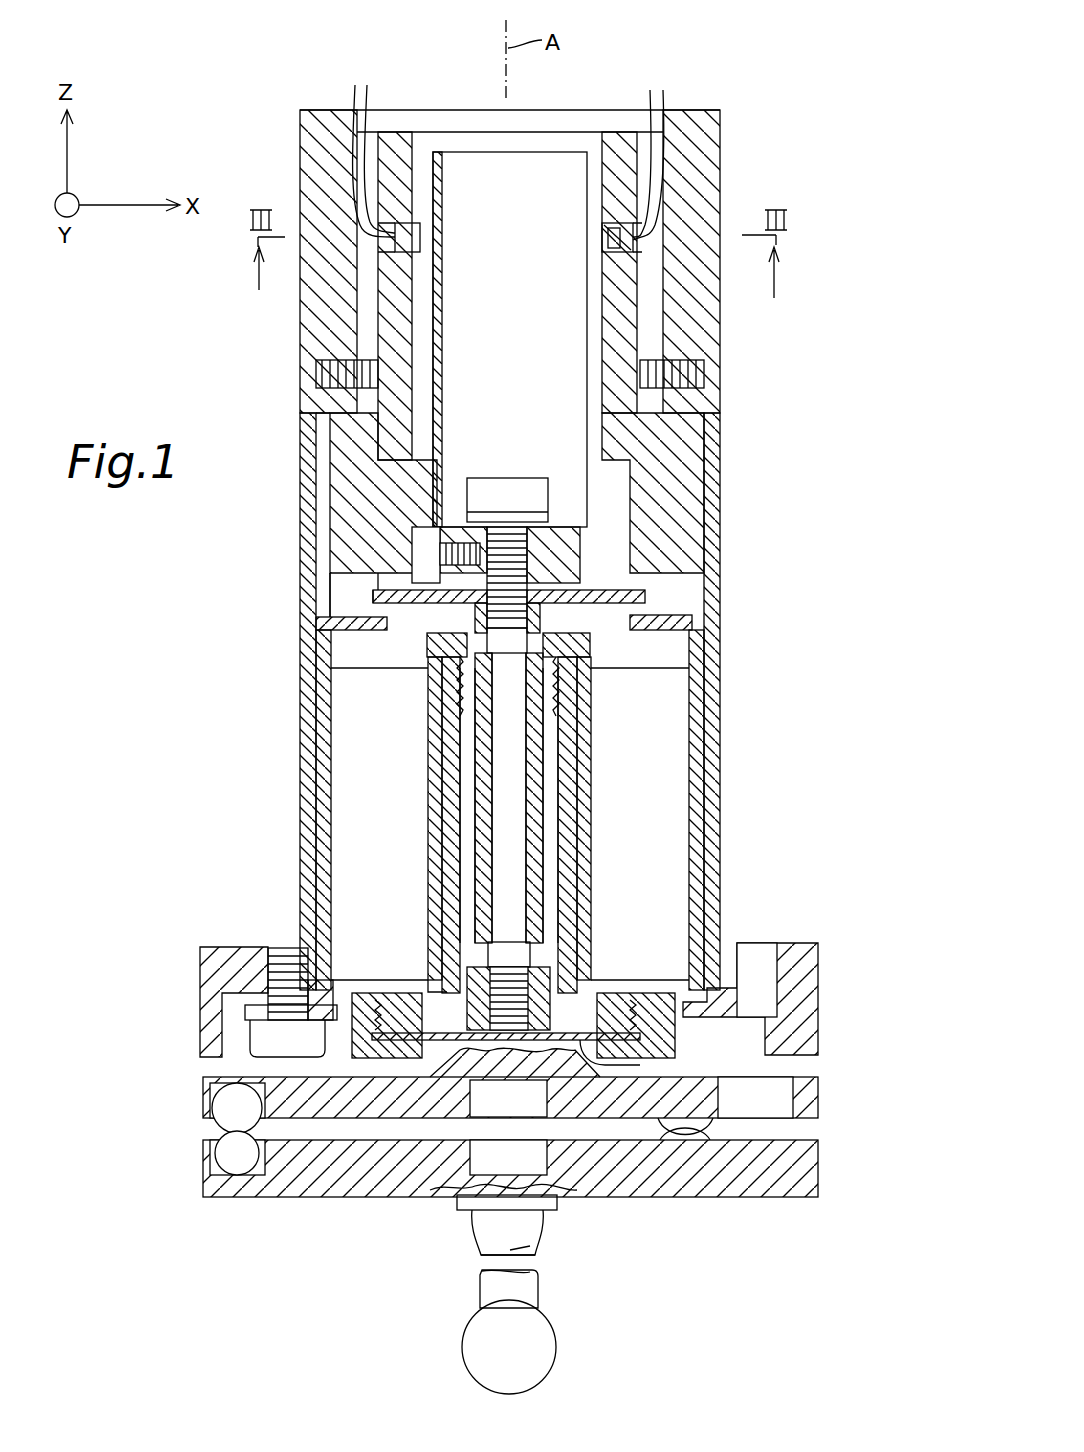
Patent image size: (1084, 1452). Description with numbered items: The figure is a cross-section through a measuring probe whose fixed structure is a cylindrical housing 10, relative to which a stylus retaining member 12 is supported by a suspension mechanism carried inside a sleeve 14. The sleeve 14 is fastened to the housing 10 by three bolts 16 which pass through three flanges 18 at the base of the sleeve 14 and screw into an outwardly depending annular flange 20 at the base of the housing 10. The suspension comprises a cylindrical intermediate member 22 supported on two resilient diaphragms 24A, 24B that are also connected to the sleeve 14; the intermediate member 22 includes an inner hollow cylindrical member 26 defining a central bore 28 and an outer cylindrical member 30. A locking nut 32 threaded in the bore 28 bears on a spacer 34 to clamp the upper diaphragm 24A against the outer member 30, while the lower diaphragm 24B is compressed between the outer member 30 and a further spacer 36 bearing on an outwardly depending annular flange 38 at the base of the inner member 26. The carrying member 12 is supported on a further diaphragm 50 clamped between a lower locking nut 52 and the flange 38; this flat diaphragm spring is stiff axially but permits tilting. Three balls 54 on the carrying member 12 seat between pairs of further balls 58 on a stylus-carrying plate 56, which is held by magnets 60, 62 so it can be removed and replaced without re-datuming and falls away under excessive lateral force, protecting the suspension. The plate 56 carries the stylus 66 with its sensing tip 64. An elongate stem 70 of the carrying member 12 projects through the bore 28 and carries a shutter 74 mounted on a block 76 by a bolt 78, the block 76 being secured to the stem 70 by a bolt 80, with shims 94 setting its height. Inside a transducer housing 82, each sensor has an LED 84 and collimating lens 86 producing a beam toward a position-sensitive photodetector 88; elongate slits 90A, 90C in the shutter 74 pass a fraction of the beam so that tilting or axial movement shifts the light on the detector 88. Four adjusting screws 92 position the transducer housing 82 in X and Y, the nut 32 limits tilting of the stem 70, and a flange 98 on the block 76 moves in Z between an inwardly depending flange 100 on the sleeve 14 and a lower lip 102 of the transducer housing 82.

The cylindrical housing 10 is at (713, 570).
The stylus retaining member 12 is at (820, 1097).
The sleeve 14 is at (706, 795).
The bolts 16 is at (256, 1040).
The flanges 18 is at (258, 1008).
The outwardly depending annular flange 20 is at (243, 947).
The cylindrical intermediate member 22 is at (592, 910).
The upper resilient diaphragm 24A is at (670, 660).
The lower resilient diaphragm 24B is at (655, 978).
The inner hollow cylindrical member 26 is at (589, 743).
The bore 28 is at (547, 853).
The outer cylindrical member 30 is at (432, 812).
The locking nut 32 is at (428, 640).
The spacer 34 is at (435, 660).
The further spacer 36 is at (430, 980).
The outwardly depending annular flange 38 is at (397, 1020).
The further diaphragm 50 is at (637, 1068).
The lower locking nut 52 is at (687, 1030).
The balls 54 is at (228, 1122).
The stylus-carrying plate 56 is at (812, 1166).
The further balls 58 is at (688, 1130).
The magnet 60 is at (485, 1108).
The magnet 62 is at (560, 1193).
The sensing tip 64 is at (535, 1333).
The stylus 66 is at (522, 1228).
The elongate stem 70 is at (478, 752).
The shutter 74 is at (578, 482).
The block 76 is at (575, 528).
The bolt 78 is at (415, 548).
The bolt 80 is at (492, 486).
The transducer housing 82 is at (623, 318).
The LED 84 is at (604, 238).
The collimating lens 86 is at (606, 244).
The position-sensitive photodetector 88 is at (412, 237).
The elongate slit 90A is at (505, 210).
The elongate slit 90C is at (483, 327).
The adjusting screws 92 is at (316, 381).
The shims 94 is at (562, 575).
The flange 98 is at (648, 596).
The inwardly depending flange 100 is at (700, 622).
The lower lip 102 is at (365, 570).